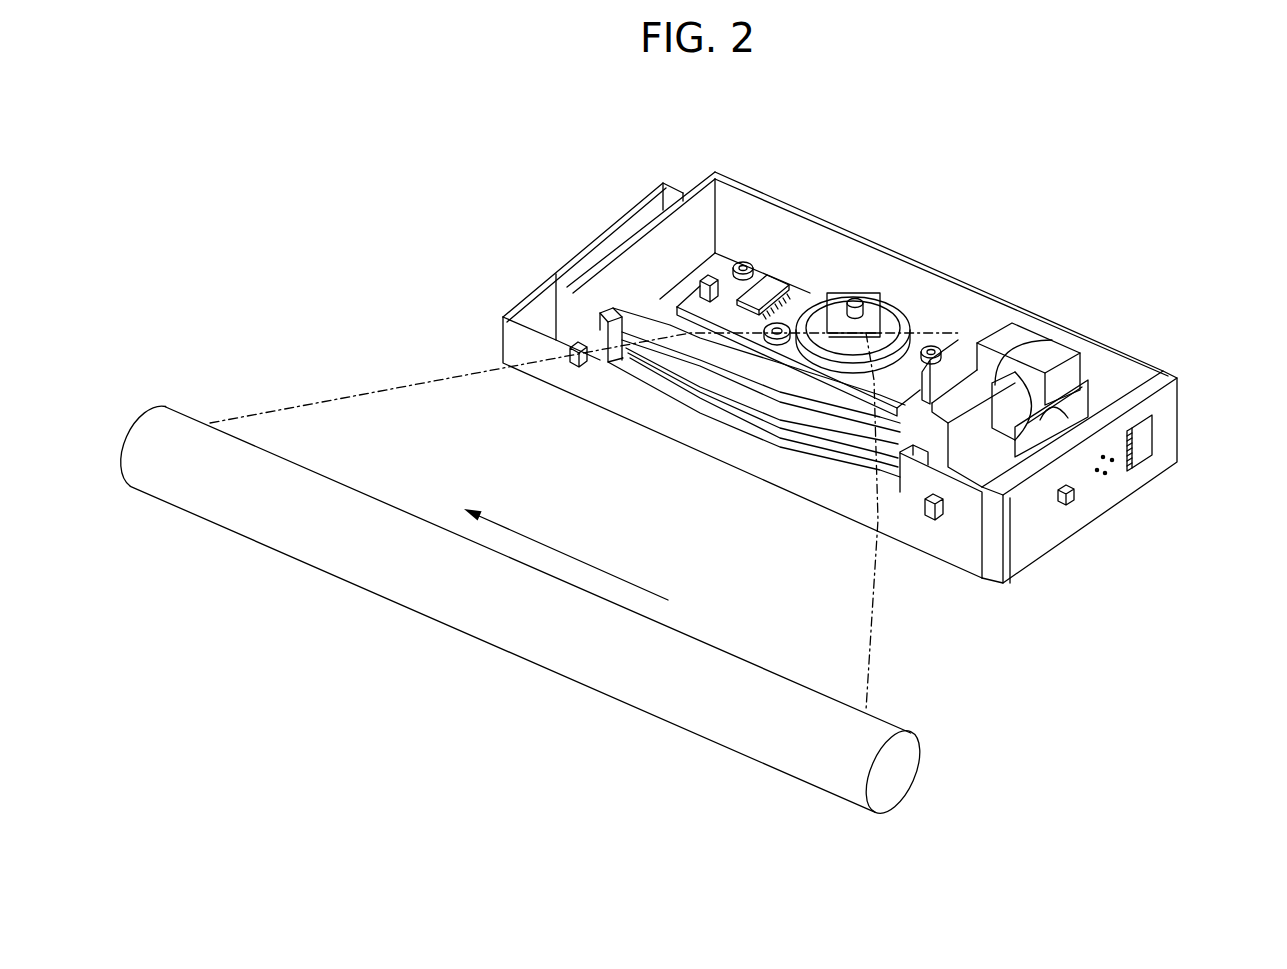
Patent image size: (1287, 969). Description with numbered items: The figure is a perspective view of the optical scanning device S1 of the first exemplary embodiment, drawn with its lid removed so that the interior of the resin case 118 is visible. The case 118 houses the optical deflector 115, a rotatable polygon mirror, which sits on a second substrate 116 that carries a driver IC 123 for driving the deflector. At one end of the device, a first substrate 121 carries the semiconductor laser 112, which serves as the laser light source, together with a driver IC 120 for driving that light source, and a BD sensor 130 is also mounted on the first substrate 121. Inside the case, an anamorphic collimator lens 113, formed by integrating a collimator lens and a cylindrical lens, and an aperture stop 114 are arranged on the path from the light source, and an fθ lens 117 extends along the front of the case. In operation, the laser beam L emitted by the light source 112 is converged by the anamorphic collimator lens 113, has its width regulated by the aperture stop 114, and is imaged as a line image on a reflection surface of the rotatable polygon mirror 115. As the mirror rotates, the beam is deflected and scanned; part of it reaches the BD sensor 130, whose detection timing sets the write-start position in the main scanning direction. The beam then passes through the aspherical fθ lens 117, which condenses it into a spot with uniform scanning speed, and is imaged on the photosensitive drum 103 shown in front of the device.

The optical scanning device S1 is at (1091, 228).
The photosensitive drum 103 is at (217, 490).
The laser beam L is at (424, 387).
The semiconductor laser 112 is at (1106, 474).
The anamorphic collimator lens 113 is at (997, 380).
The aperture stop 114 is at (940, 368).
The optical deflector 115 is at (879, 307).
The second substrate 116 is at (797, 300).
The fθ lens 117 is at (672, 327).
The case 118 is at (698, 222).
The driver IC 120 is at (1144, 443).
The first substrate 121 is at (1024, 556).
The driver IC 123 is at (771, 282).
The BD sensor 130 is at (1074, 498).